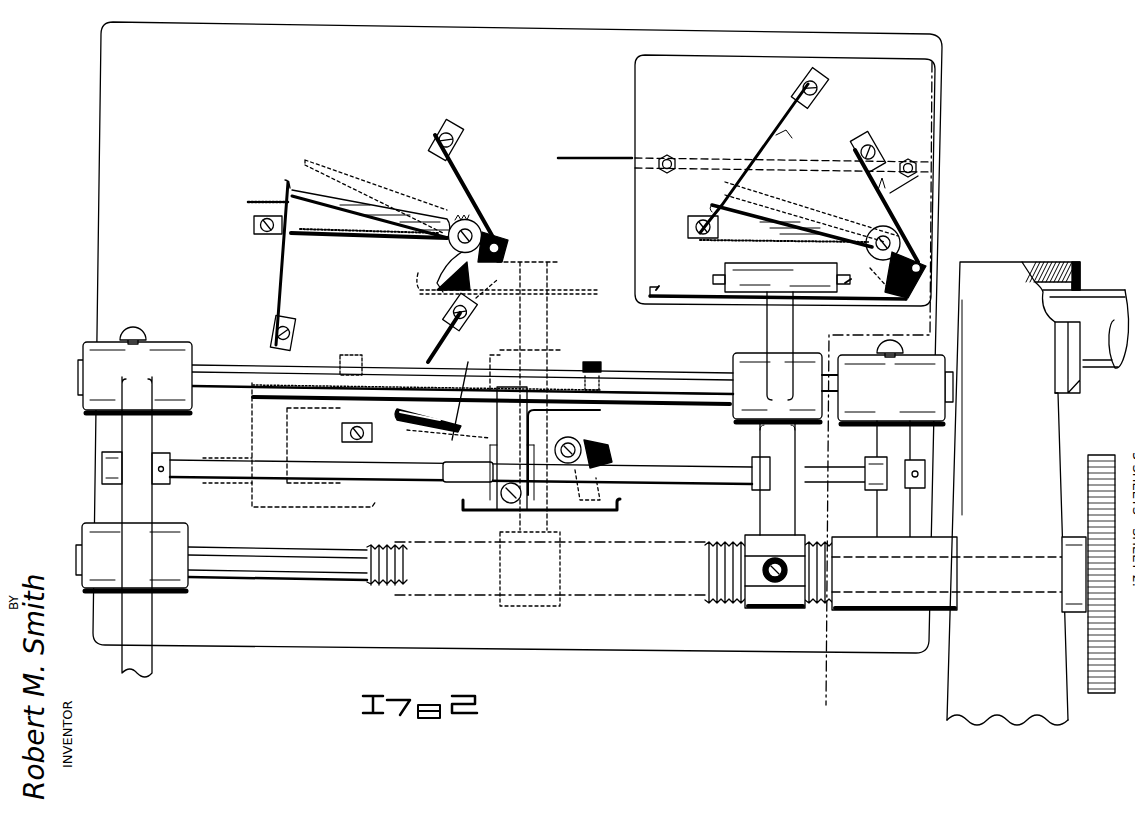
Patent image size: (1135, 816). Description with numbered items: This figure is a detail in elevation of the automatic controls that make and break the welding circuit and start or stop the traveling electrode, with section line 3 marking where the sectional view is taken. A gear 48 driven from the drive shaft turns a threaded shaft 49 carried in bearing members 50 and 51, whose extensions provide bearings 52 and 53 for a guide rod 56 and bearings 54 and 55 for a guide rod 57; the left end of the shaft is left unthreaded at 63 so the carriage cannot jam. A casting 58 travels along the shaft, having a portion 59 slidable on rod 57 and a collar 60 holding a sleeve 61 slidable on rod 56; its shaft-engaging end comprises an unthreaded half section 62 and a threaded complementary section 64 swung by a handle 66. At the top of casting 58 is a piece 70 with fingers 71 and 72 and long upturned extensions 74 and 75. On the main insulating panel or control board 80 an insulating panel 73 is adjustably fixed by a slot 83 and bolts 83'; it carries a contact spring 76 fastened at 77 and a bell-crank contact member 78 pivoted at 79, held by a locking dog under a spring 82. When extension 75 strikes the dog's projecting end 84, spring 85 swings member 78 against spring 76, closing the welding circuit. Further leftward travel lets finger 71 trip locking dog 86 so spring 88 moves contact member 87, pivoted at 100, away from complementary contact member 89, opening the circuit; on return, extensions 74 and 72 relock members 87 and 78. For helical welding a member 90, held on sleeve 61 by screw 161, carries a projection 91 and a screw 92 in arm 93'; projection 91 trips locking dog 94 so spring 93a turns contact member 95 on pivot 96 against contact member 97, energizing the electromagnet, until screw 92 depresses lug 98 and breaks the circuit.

The section line 3— 3 is at (932, 88).
The main insulating panel or control board 80 is at (111, 208).
The insulating panel 73 is at (640, 100).
The slot 83 is at (744, 152).
The bolts 83' is at (789, 166).
The spring 82 is at (920, 176).
The contact spring 76 is at (752, 134).
The fastening of contact spring 77 is at (826, 84).
The contact member 78 is at (768, 185).
The piece 70 is at (750, 277).
The spring 85 is at (748, 243).
The pivot 79 is at (902, 235).
The projecting end of locking dog 84 is at (905, 295).
The finger 71 is at (726, 284).
The long extension 74 is at (686, 300).
The long extension 75 is at (660, 290).
The finger 72 is at (862, 298).
The complementary contact member 89 is at (282, 272).
The spring 88 is at (362, 240).
The contact member 87 is at (385, 200).
The pivot 100 is at (472, 232).
The pivoted locking dog 86 is at (508, 250).
The contact member 97 is at (453, 330).
The portion of casting slidable on rod 59 is at (556, 352).
The guide rod 57 is at (225, 364).
The arm of member 90 93' is at (491, 404).
The spring 93a is at (448, 390).
The sleeve 61 is at (224, 458).
The bearing 52 is at (104, 467).
The unthreaded end of shaft 63 is at (330, 580).
The threaded shaft 49 is at (724, 604).
The threaded complementary section 64 is at (750, 612).
The handle 66 is at (778, 586).
The unthreaded half section 62 is at (798, 536).
The casting 58 is at (768, 512).
The collar 60 is at (752, 498).
The bearing 54 is at (96, 354).
The bearing member 51 is at (96, 536).
The bearing 55 is at (930, 372).
The bearing 53 is at (928, 472).
The guide rod 56 is at (500, 470).
The contact member 95 is at (498, 508).
The pivot 96 is at (580, 450).
The pivoted locking dog 94 is at (612, 455).
The lug 98 is at (440, 428).
The screw 92 is at (352, 356).
The member 90 is at (250, 506).
The projection 91 is at (372, 512).
The screw 161 is at (515, 540).
The bearing member 50 is at (915, 582).
The gear 48 is at (1101, 468).